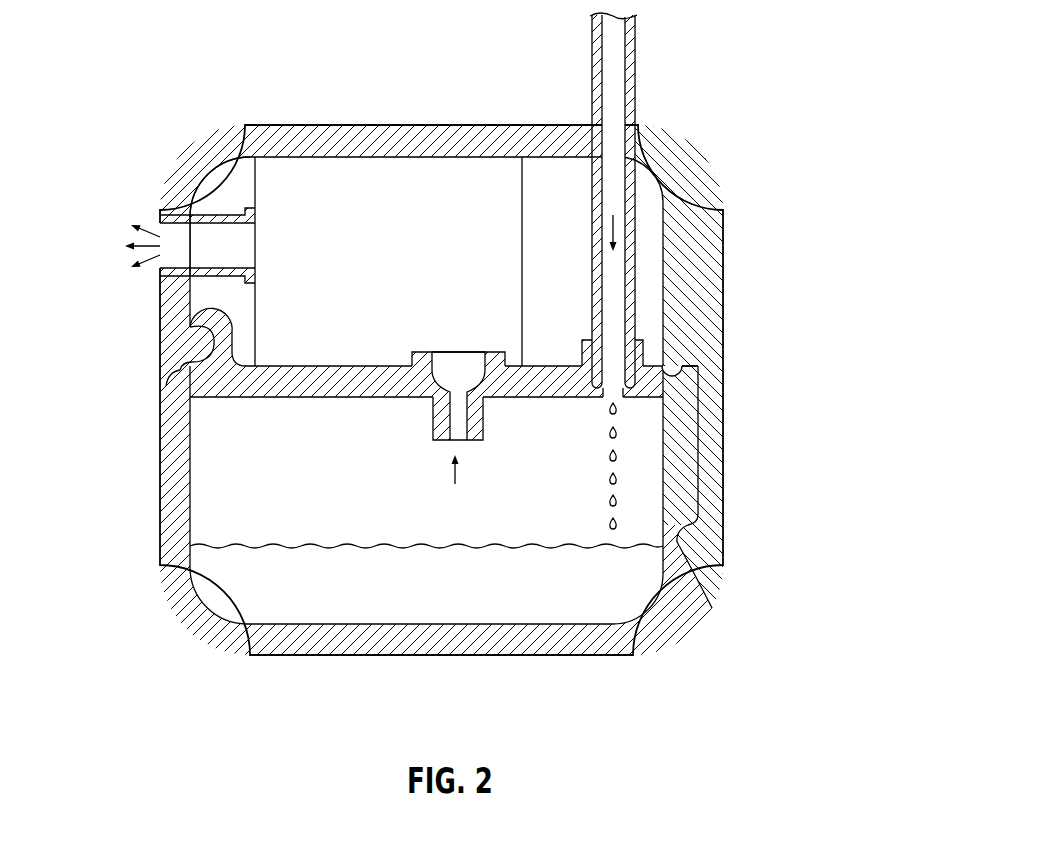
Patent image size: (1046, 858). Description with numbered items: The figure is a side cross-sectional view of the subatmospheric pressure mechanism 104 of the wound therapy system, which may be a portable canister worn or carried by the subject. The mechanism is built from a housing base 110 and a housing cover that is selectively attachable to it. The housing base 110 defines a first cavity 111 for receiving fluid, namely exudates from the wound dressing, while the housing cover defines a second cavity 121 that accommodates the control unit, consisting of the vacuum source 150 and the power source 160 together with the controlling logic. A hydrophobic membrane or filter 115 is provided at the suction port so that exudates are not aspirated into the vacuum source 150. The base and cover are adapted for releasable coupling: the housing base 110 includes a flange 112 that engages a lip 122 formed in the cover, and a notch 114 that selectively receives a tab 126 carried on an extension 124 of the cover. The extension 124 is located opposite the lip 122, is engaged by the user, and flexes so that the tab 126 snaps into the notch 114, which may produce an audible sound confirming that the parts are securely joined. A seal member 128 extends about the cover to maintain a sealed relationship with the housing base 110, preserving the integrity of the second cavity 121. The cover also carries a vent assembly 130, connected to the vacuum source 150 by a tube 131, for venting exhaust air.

The subatmospheric pressure mechanism 104 is at (456, 354).
The housing base 110 is at (477, 412).
The first cavity 111 is at (377, 518).
The flange 112 is at (438, 351).
The notch 114 is at (687, 515).
The hydrophobic membrane or filter 115 is at (458, 443).
The second cavity 121 is at (234, 168).
The lip 122 is at (190, 347).
The extension 124 is at (712, 558).
The tab 126 is at (676, 541).
The seal member 128 is at (170, 383).
The vent assembly 130 is at (145, 212).
The tube 131 is at (188, 170).
The vacuum source 150 is at (406, 272).
The power source 160 is at (580, 271).